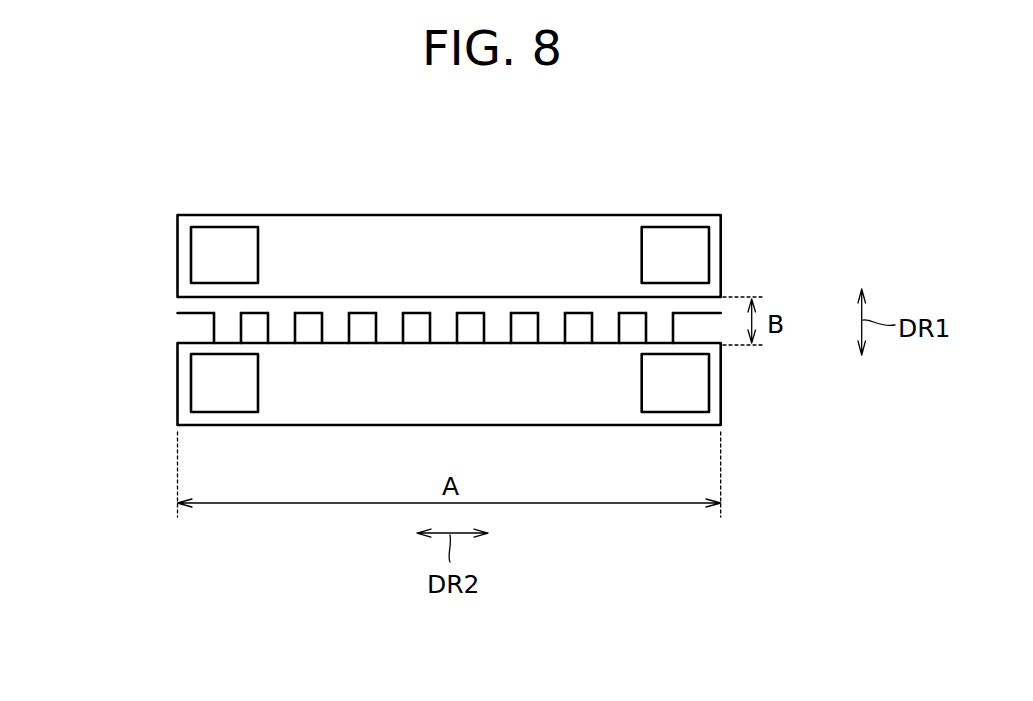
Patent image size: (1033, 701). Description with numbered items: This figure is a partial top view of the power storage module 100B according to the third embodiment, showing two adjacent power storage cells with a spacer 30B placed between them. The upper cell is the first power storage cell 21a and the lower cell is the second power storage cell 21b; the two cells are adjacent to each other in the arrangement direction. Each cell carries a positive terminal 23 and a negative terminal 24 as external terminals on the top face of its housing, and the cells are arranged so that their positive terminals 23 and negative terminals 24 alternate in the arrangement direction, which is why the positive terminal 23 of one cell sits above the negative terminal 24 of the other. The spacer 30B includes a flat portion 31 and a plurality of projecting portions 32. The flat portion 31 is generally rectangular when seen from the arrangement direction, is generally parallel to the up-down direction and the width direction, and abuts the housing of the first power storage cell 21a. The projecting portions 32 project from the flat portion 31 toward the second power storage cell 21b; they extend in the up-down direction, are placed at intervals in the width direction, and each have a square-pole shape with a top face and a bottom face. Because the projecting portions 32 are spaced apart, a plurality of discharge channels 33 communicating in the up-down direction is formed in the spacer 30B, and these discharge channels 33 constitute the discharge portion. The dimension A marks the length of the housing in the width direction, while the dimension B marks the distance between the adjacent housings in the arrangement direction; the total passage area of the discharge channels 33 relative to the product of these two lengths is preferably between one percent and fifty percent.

The power storage module 100B is at (808, 130).
The first power storage cell 21a is at (721, 232).
The second power storage cell 21b is at (721, 383).
The positive terminal 23 is at (675, 242).
The negative terminal 24 is at (225, 242).
The spacer 30B is at (375, 273).
The flat portion 31 is at (190, 304).
The projecting portions 32 is at (223, 328).
The discharge channels 33 is at (253, 335).